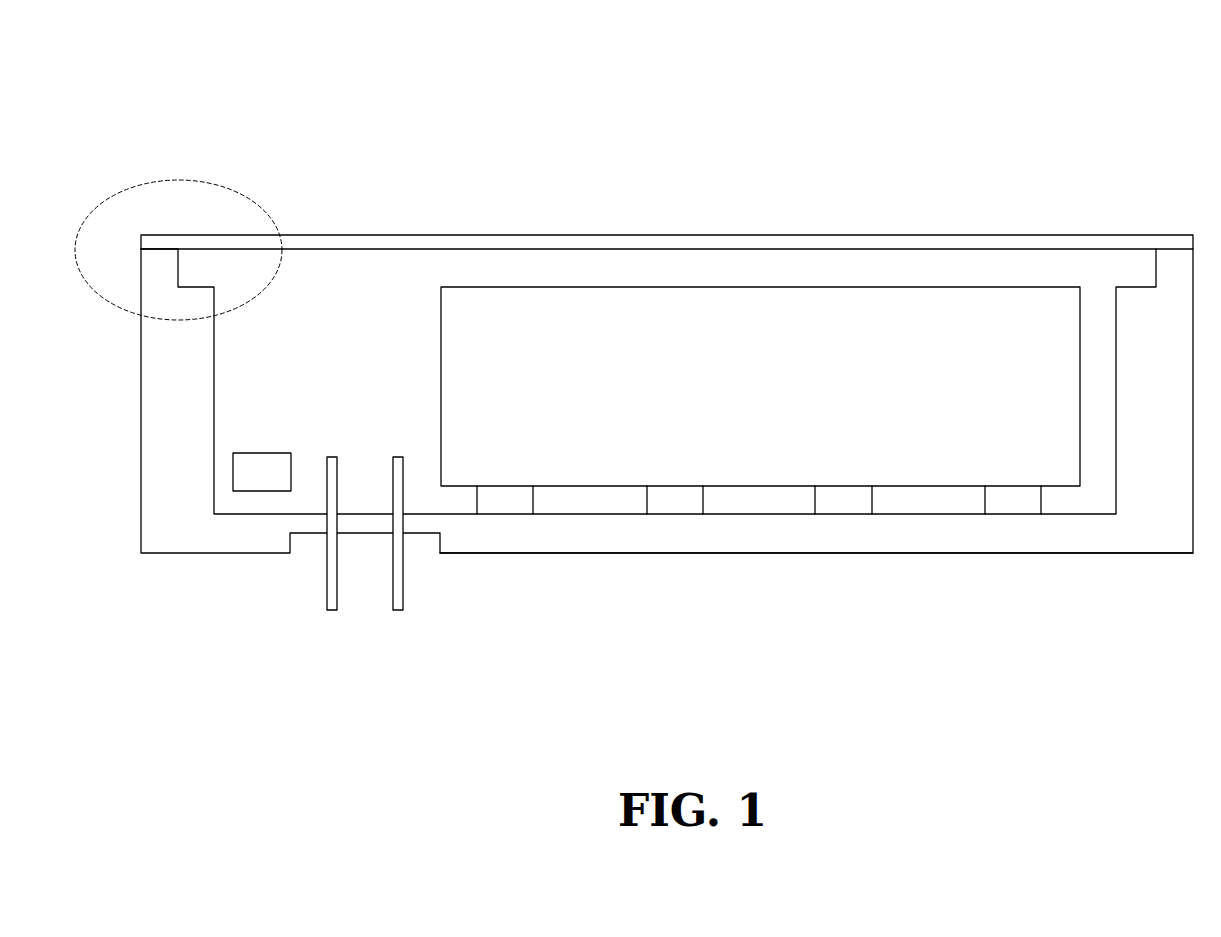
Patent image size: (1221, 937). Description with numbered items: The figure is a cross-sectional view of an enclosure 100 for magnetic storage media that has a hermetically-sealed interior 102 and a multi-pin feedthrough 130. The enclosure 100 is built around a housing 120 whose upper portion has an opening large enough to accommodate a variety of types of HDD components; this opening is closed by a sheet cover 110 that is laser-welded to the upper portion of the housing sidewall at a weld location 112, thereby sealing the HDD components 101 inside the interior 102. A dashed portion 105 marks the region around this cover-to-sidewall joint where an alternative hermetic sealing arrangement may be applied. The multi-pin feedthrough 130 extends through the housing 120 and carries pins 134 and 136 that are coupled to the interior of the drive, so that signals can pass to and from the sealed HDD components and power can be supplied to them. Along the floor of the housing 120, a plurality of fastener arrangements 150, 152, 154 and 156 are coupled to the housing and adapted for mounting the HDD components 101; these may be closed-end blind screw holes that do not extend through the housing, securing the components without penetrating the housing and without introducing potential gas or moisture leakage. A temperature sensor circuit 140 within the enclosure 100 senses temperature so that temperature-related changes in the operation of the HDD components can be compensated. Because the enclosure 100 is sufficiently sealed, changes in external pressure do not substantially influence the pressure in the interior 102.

The enclosure 100 is at (743, 56).
The HDD components 101 is at (440, 345).
The hermetically-sealed interior 102 is at (966, 266).
The dashed portion 105 is at (178, 179).
The sheet cover 110 is at (638, 234).
The weld location 112 is at (160, 235).
The housing 120 is at (758, 554).
The multi-pin feedthrough 130 is at (397, 682).
The pin 134 is at (332, 613).
The pin 136 is at (397, 613).
The temperature sensor circuit 140 is at (283, 452).
The fastener arrangement 150 is at (505, 485).
The fastener arrangement 152 is at (668, 485).
The fastener arrangement 154 is at (838, 485).
The fastener arrangement 156 is at (1008, 485).